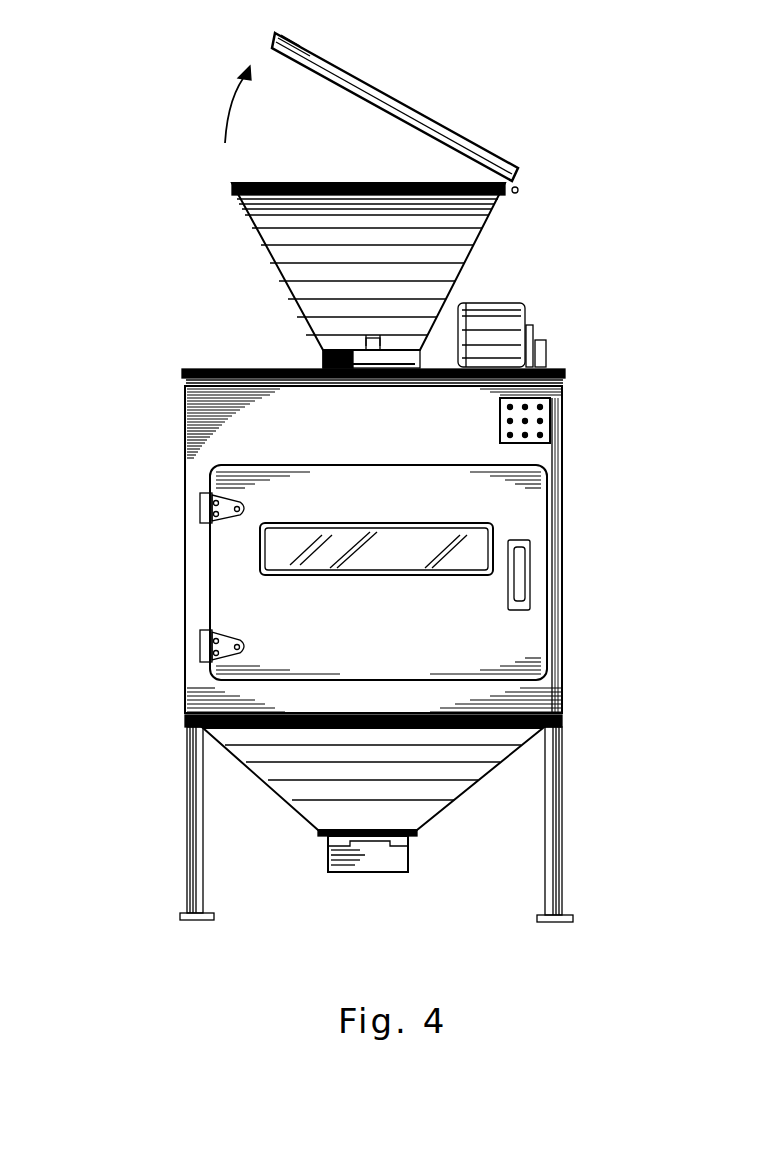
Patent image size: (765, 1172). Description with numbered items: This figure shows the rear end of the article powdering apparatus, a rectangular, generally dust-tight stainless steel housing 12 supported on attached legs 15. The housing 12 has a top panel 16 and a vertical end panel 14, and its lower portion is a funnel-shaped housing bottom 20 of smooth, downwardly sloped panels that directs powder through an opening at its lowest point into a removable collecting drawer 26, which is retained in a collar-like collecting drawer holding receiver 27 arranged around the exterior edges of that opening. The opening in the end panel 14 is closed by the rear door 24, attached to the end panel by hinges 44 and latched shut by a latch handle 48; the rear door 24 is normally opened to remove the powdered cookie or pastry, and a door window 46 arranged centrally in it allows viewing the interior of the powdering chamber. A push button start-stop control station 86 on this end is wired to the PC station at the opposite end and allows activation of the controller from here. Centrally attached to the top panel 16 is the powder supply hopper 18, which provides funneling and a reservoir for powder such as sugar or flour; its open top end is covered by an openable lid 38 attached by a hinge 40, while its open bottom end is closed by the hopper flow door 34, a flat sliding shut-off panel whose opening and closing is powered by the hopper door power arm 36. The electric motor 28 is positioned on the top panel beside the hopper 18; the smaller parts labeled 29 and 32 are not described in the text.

The housing 12 is at (178, 413).
The end panel 14 is at (491, 453).
The legs 15 is at (187, 810).
The top panel 16 is at (212, 368).
The powder supply hopper 18 is at (232, 183).
The funnel-shaped housing bottom 20 is at (455, 770).
The rear door 24 is at (520, 527).
The collecting drawer 26 is at (368, 872).
The collecting drawer holding receiver 27 is at (417, 834).
The electric motor 28 is at (508, 303).
The coupling 29 is at (533, 335).
The shaft housing 32 is at (546, 352).
The hopper flow door 34 is at (322, 362).
The hopper door power arm 36 is at (370, 345).
The lid 38 is at (412, 105).
The hinge 40 is at (520, 189).
The hinges 44 is at (200, 640).
The door window 46 is at (369, 545).
The latch handle 48 is at (520, 571).
The push button start-stop control station 86 is at (540, 418).